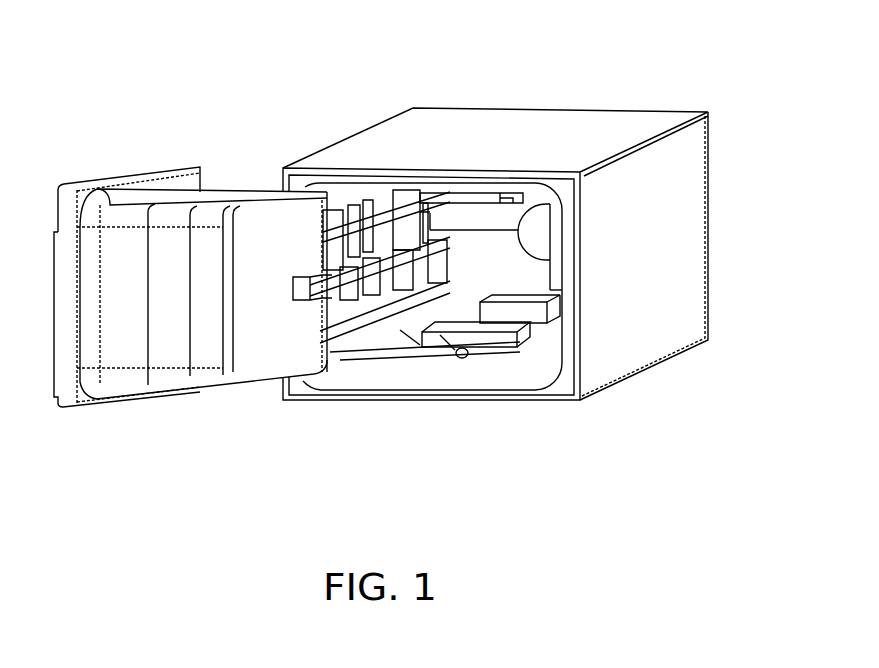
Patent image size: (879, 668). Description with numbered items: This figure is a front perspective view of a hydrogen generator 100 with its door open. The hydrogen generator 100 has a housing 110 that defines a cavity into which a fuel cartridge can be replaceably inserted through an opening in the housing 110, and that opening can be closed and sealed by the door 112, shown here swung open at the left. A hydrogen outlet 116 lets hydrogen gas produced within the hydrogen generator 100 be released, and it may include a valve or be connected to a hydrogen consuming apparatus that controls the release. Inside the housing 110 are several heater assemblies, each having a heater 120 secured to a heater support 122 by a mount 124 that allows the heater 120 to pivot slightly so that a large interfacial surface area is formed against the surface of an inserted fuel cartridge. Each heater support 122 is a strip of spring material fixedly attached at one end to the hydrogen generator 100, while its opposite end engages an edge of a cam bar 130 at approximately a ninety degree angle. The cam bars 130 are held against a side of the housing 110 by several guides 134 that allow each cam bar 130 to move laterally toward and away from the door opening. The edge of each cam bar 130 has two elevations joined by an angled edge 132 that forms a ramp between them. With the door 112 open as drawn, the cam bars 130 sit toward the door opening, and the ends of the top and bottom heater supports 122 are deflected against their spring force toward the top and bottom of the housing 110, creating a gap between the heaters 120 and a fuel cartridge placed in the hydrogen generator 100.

The hydrogen generator 100 is at (214, 63).
The housing 110 is at (653, 365).
The door 112 is at (78, 408).
The hydrogen outlet 116 is at (535, 205).
The heater 120 is at (467, 198).
The heater support 122 is at (417, 350).
The mount 124 is at (452, 350).
The cam bar 130 is at (330, 200).
The angled edge 132 is at (347, 197).
The guide 134 is at (406, 200).